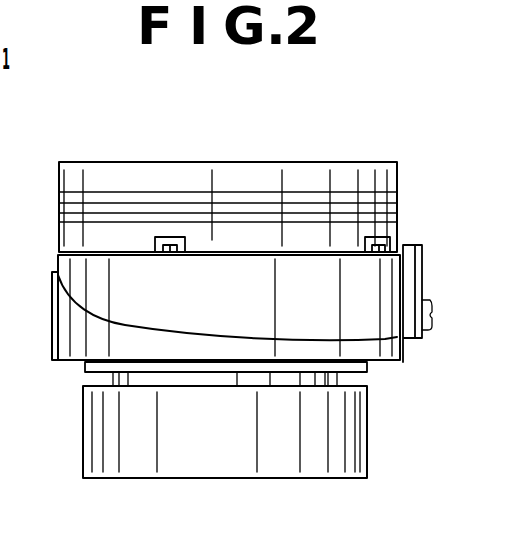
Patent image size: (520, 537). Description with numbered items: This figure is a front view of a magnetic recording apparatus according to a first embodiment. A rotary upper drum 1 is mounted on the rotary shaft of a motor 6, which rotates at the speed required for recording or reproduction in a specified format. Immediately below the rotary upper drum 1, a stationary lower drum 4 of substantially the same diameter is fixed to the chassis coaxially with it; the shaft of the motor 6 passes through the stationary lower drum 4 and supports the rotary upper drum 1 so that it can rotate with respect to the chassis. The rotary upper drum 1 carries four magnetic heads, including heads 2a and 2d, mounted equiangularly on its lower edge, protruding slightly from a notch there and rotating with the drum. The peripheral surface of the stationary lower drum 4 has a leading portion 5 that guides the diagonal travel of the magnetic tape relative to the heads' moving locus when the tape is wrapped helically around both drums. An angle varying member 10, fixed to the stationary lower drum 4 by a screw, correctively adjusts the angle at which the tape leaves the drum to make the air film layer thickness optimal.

The rotary upper drum 1 is at (267, 183).
The magnetic head 2a is at (374, 237).
The magnetic head 2d is at (176, 237).
The stationary lower drum 4 is at (393, 357).
The leading portion 5 is at (123, 323).
The motor 6 is at (335, 449).
The angle varying member 10 is at (417, 272).